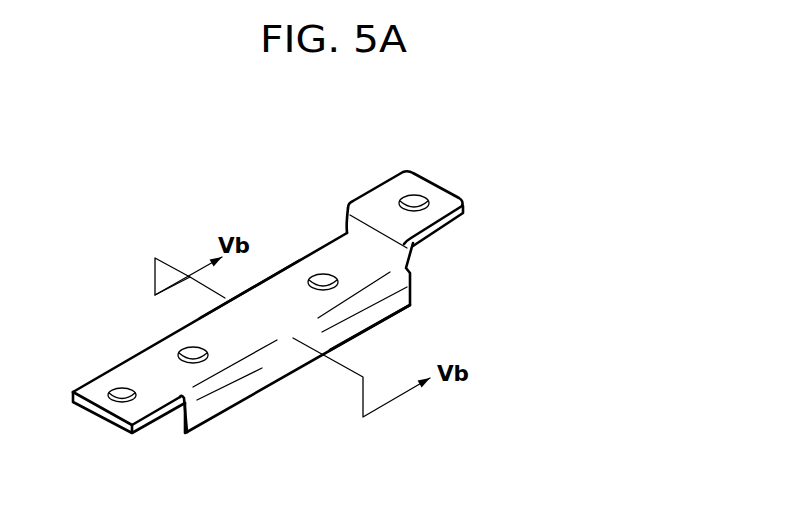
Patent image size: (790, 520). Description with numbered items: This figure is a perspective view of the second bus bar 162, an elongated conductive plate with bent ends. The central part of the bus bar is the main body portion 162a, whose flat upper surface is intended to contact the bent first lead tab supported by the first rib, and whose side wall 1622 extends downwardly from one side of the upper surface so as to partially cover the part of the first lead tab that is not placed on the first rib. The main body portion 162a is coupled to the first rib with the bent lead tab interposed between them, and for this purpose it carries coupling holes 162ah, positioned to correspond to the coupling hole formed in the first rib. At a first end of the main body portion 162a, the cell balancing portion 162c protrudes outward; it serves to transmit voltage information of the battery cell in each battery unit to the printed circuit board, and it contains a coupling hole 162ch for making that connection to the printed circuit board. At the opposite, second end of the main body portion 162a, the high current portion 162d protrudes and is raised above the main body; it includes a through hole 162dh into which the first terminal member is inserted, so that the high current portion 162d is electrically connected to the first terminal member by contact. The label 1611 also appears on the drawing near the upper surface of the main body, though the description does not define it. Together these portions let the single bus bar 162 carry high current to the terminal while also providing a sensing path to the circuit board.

The second bus bar 162 is at (518, 217).
The main body portion 162a is at (203, 332).
The cell balancing portion 162c is at (88, 388).
The high current portion 162d is at (377, 200).
The coupling hole 162ah is at (325, 292).
The coupling hole 162ch is at (122, 403).
The through hole 162dh is at (415, 197).
The first side surface of body portion 1611 is at (278, 283).
The side wall 1622 is at (387, 323).